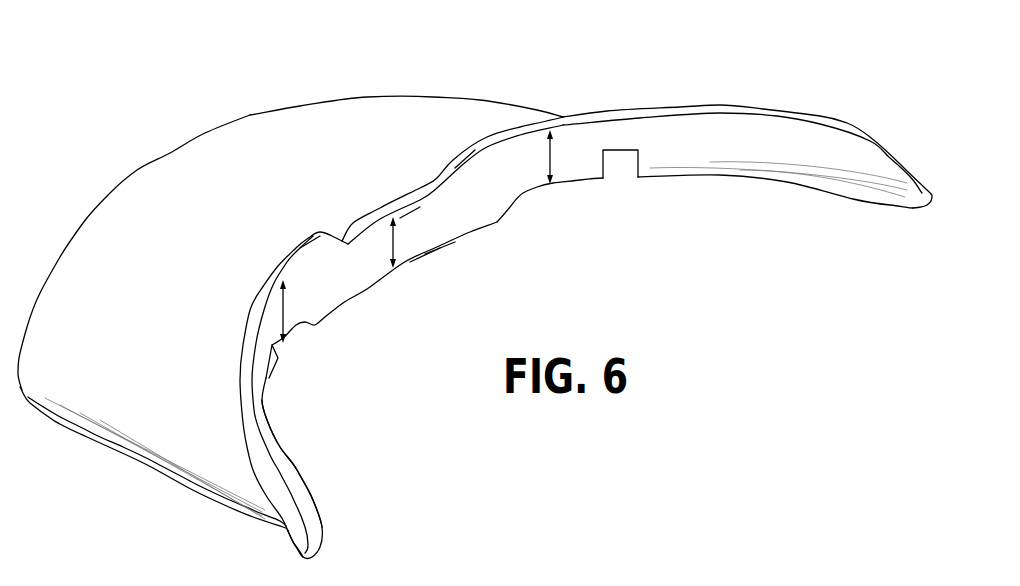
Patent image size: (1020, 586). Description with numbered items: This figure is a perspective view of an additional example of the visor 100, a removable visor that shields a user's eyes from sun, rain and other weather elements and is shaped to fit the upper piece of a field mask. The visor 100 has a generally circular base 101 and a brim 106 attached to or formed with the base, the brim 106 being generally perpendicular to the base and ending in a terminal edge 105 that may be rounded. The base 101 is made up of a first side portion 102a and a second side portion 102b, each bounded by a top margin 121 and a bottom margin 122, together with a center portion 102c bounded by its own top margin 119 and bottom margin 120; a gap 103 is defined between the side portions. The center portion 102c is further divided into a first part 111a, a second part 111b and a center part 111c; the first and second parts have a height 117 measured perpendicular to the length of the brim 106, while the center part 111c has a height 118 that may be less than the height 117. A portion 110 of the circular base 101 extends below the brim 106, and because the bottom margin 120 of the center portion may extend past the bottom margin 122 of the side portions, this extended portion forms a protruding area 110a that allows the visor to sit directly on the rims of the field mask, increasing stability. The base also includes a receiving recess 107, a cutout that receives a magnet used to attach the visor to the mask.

The visor 100 is at (243, 81).
The circular base 101 is at (760, 127).
The first side portion 102a is at (825, 137).
The second side portion 102b is at (298, 472).
The center portion 102c is at (368, 267).
The gap 103 is at (355, 226).
The terminal edge 105 is at (136, 170).
The brim 106 is at (344, 117).
The receiving recess 107 is at (270, 377).
The portion of the circular base 110 is at (781, 183).
The protruding area 110a is at (437, 243).
The first part 111a is at (468, 197).
The second part 111b is at (317, 273).
The center part 111c is at (417, 240).
The height 117 is at (280, 312).
The height 118 is at (376, 220).
The top margin 119 is at (410, 197).
The bottom margin 120 is at (468, 237).
The top margin 121 is at (706, 107).
The bottom margin 122 is at (711, 178).